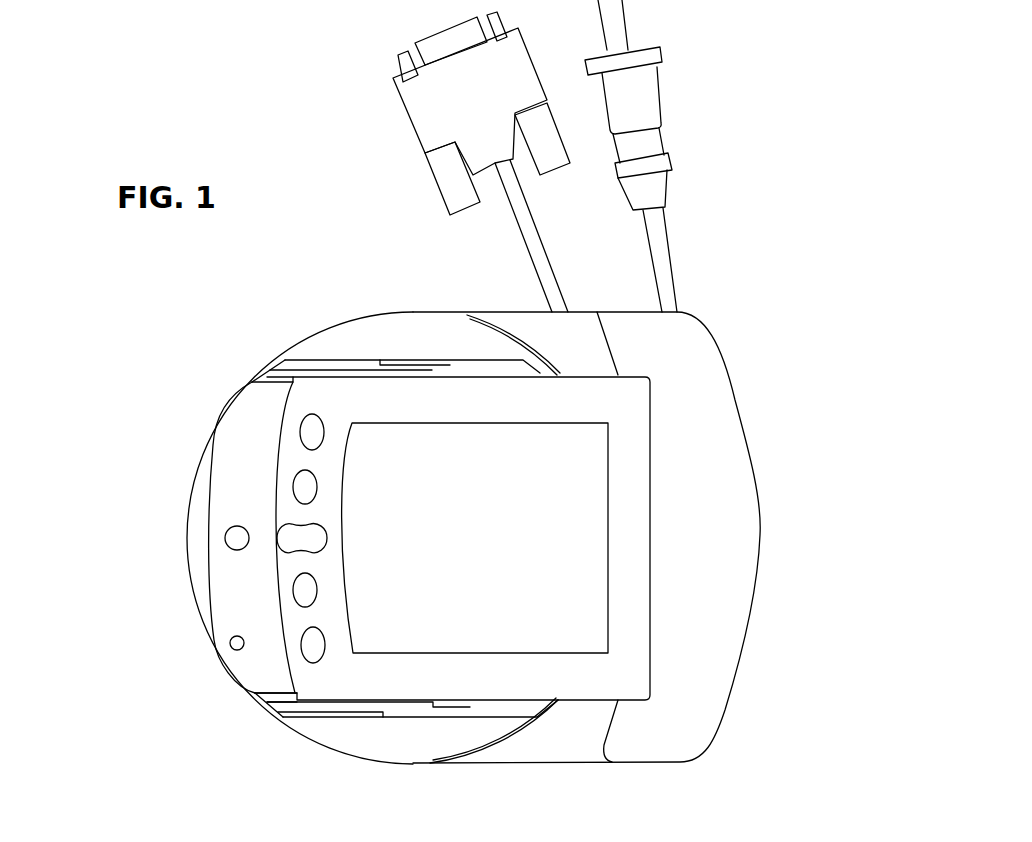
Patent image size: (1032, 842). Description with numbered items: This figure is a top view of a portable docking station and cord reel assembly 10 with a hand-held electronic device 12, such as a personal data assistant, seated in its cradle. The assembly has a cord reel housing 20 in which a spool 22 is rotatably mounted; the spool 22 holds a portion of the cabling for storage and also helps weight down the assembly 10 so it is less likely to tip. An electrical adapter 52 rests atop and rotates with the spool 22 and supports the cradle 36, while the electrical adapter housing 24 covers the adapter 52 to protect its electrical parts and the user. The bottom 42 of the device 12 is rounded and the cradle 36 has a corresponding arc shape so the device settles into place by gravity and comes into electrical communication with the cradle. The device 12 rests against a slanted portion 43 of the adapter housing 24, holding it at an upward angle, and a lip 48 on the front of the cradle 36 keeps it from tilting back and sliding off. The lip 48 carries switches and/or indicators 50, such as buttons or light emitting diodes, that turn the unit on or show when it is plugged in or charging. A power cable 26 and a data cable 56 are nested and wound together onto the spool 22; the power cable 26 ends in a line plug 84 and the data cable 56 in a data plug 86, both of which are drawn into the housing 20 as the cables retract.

The docking station assembly 10 is at (150, 365).
The hand-held electronic device 12 is at (657, 410).
The cord reel housing 20 is at (707, 687).
The spool 22 is at (372, 340).
The electrical adapter housing 24 is at (483, 707).
The power cable 26 is at (662, 263).
The cradle 36 is at (257, 675).
The bottom of the device 42 is at (310, 387).
The slanted portion 43 is at (362, 705).
The lip 48 is at (282, 685).
The switches and/or indicators 50 is at (233, 537).
The electrical adapter 52 is at (482, 370).
The data cable 56 is at (532, 240).
The line plug 84 is at (630, 97).
The data plug 86 is at (420, 93).